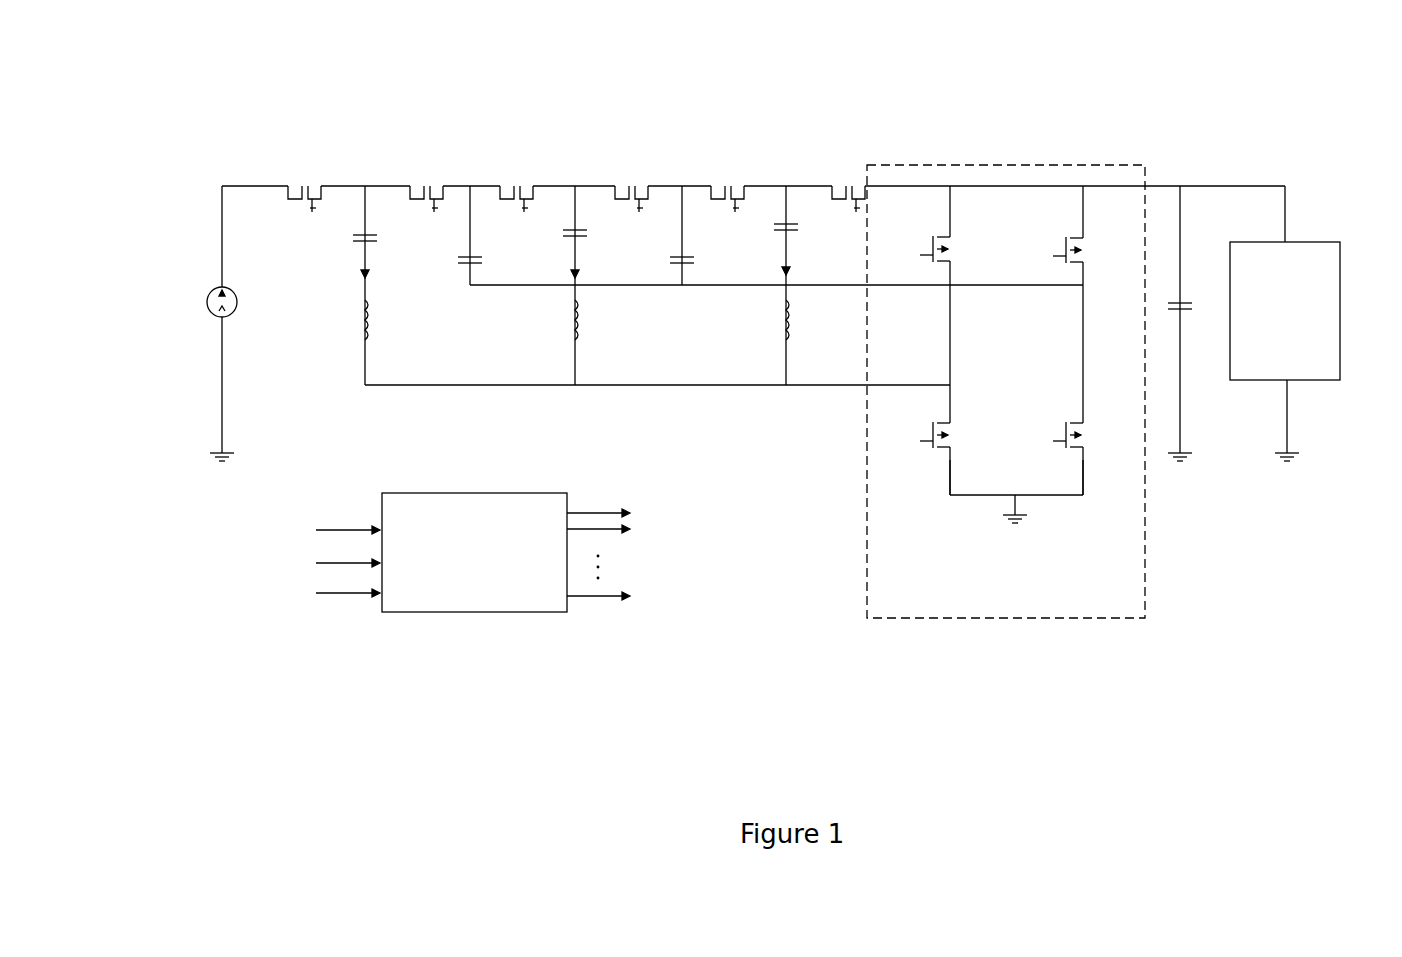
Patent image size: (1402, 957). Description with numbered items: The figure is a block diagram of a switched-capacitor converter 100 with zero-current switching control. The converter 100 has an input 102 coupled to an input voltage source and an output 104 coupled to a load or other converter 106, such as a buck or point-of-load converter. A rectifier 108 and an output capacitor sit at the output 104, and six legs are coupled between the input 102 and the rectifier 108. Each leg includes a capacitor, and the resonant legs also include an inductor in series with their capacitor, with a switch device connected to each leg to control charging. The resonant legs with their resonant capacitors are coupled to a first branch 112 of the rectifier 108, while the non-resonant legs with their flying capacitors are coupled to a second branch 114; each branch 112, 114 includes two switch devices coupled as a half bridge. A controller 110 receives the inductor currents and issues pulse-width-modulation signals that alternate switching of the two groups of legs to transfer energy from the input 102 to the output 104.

The switched-capacitor converter 100 is at (133, 63).
The input 102 is at (198, 197).
The output 104 is at (1335, 172).
The load or other converter 106 is at (1299, 349).
The rectifier 108 is at (1136, 614).
The controller 110 is at (489, 574).
The first branch 112 is at (950, 522).
The second branch 114 is at (1083, 522).